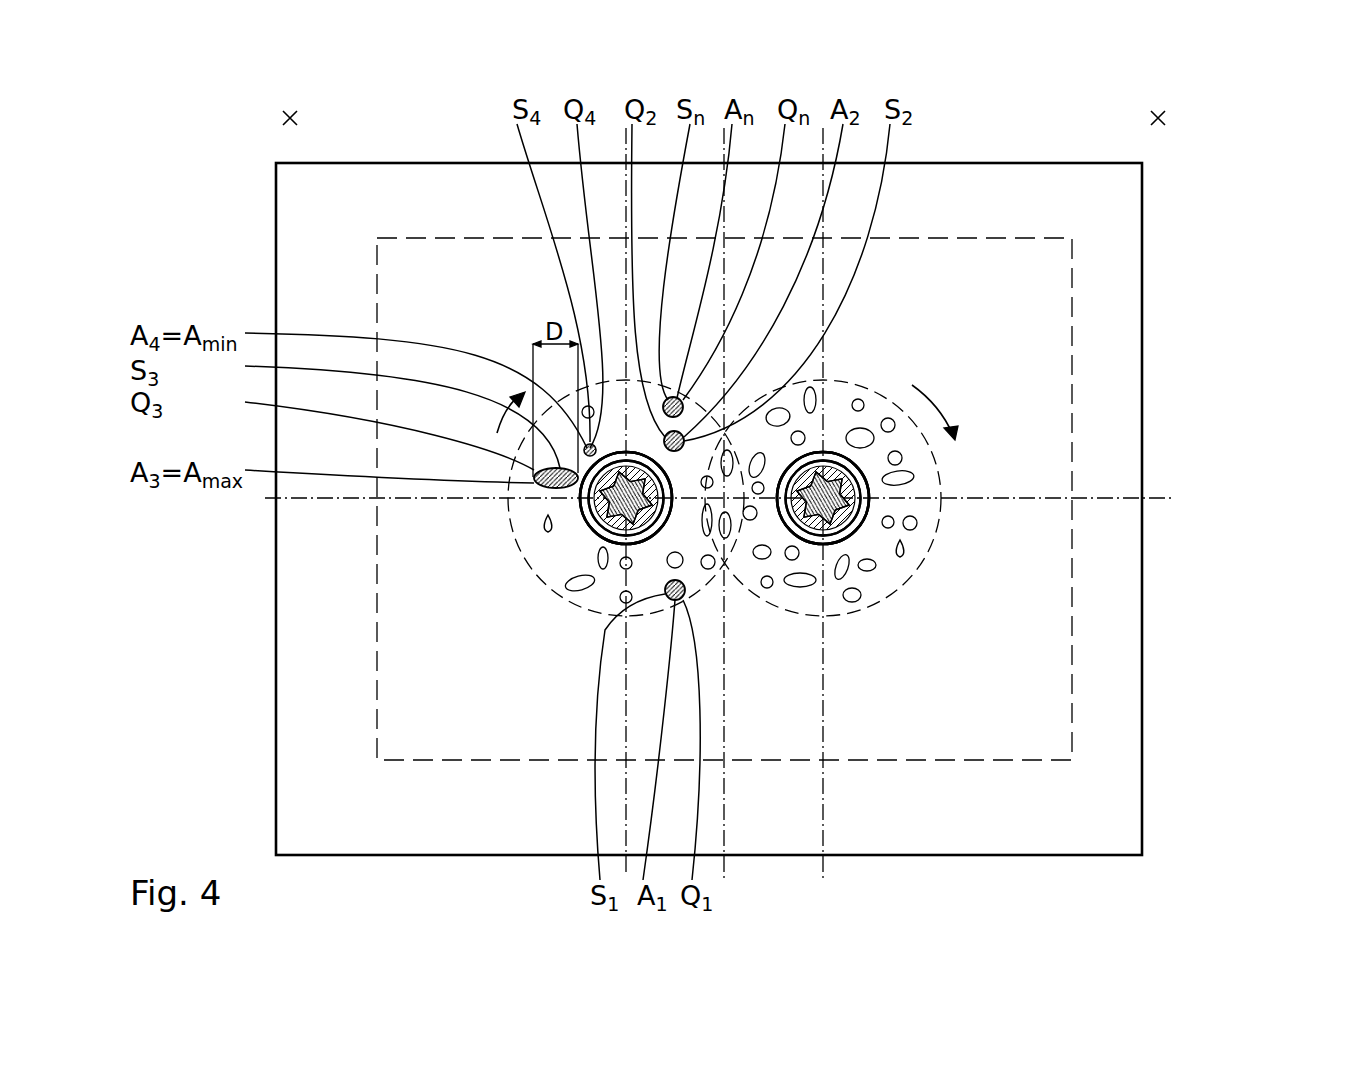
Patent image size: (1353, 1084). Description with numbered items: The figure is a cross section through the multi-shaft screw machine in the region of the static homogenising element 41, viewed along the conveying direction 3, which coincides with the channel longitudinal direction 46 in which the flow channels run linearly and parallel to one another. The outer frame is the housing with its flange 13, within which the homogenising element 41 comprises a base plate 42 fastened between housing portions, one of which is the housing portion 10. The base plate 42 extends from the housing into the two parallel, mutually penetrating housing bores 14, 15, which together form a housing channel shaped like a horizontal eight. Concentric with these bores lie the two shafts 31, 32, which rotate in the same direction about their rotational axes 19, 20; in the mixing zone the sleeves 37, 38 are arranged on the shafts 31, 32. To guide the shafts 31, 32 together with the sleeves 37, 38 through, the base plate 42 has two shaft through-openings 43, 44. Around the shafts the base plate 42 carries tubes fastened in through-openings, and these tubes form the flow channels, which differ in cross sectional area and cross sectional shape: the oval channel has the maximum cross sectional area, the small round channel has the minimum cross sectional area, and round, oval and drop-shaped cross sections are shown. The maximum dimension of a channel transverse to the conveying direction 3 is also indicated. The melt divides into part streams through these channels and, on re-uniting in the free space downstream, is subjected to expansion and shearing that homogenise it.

The conveying direction 3 is at (293, 118).
The housing portion 10 is at (1012, 238).
The flange 13 is at (1142, 388).
The housing bore 14 is at (870, 490).
The housing bore 15 is at (534, 477).
The rotational axis 19 is at (918, 525).
The rotational axis 20 is at (592, 523).
The shaft 31 is at (865, 495).
The shaft 32 is at (598, 499).
The sleeve 37 is at (850, 498).
The sleeve 38 is at (588, 512).
The homogenising element 41 is at (880, 388).
The base plate 42 is at (522, 538).
The shaft through-opening 43 is at (860, 516).
The shaft through-opening 44 is at (585, 527).
The channel longitudinal direction 46 is at (1161, 118).